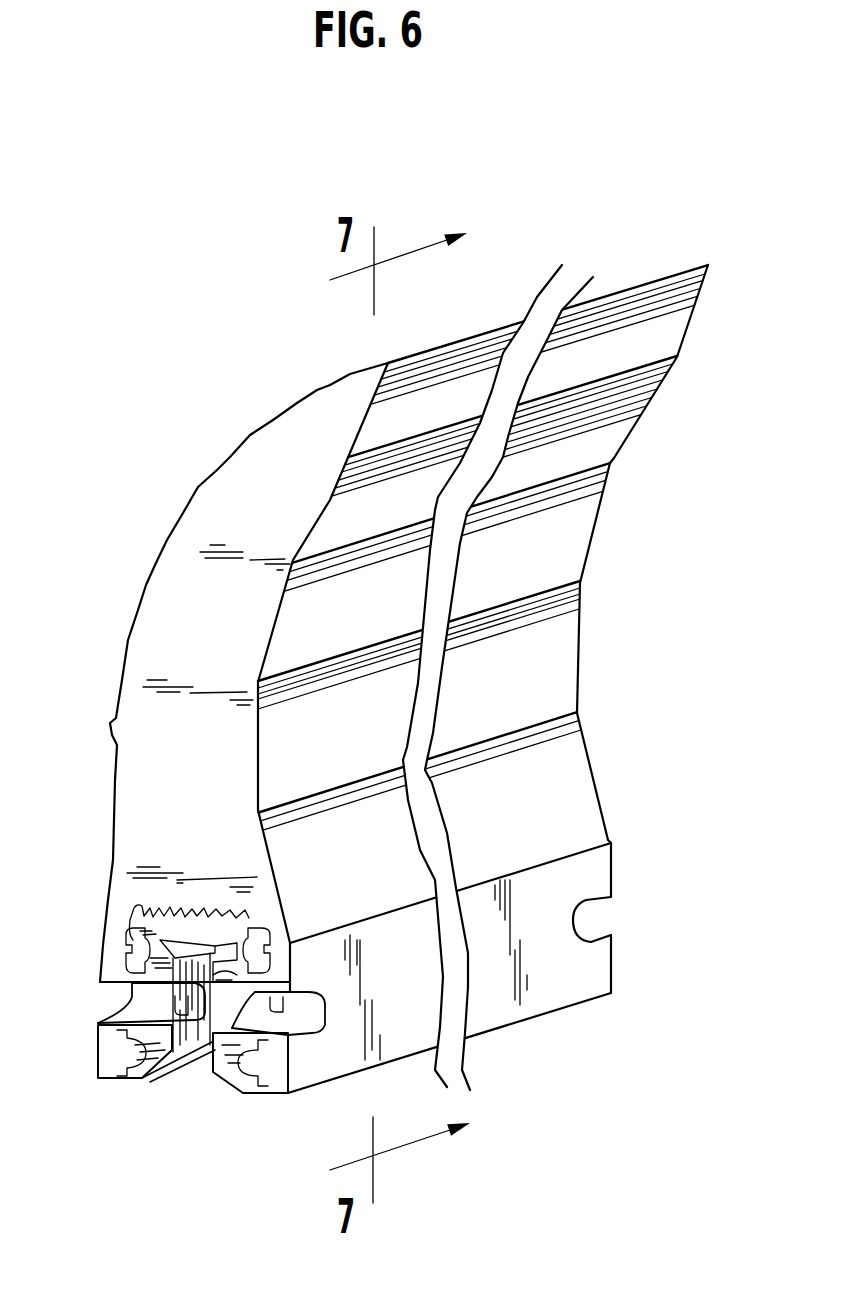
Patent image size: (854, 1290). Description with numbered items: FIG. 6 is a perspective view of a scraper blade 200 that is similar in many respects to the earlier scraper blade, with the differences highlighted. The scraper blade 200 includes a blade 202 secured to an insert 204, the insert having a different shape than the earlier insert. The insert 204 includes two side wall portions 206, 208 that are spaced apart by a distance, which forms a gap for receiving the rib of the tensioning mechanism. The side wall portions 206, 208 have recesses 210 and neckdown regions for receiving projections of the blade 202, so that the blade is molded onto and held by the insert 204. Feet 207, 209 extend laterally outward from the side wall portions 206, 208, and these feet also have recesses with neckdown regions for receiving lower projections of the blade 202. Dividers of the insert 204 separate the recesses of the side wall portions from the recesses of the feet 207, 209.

The scraper blade 200 is at (158, 382).
The blade 202 is at (160, 613).
The insert 204 is at (128, 1058).
The side wall portion 206 is at (162, 1052).
The foot 207 is at (118, 1033).
The side wall portion 208 is at (224, 1050).
The foot 209 is at (247, 1085).
The recess 210 is at (145, 952).